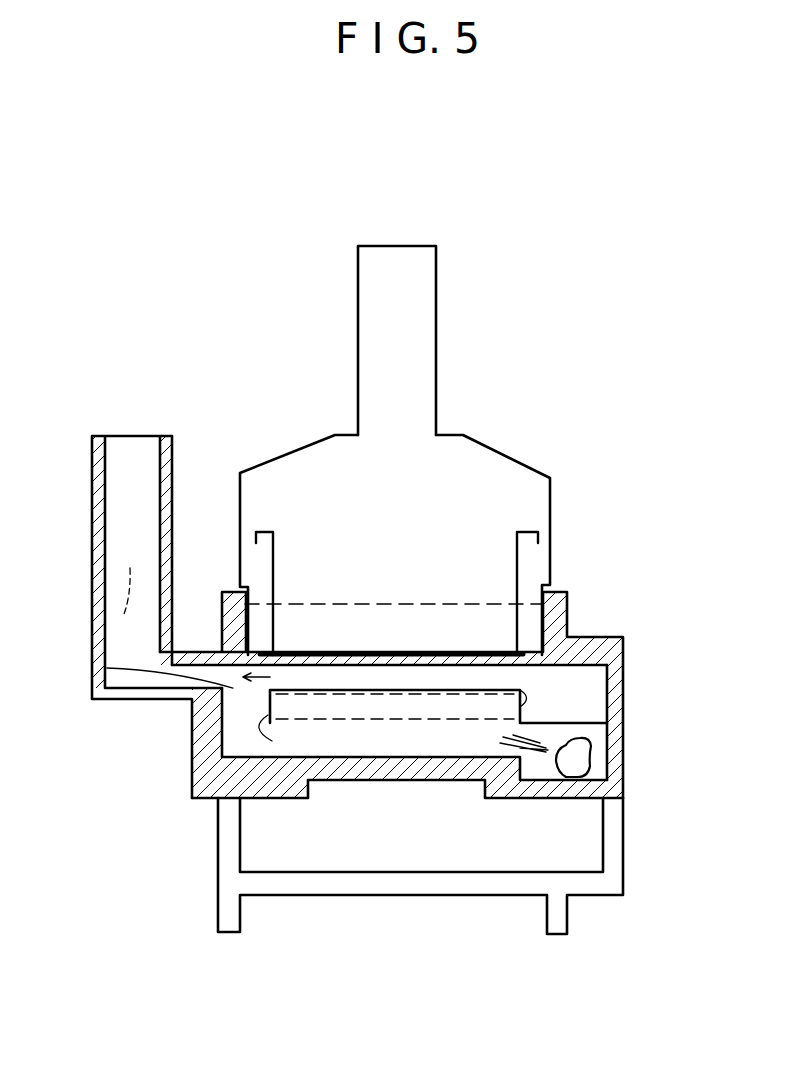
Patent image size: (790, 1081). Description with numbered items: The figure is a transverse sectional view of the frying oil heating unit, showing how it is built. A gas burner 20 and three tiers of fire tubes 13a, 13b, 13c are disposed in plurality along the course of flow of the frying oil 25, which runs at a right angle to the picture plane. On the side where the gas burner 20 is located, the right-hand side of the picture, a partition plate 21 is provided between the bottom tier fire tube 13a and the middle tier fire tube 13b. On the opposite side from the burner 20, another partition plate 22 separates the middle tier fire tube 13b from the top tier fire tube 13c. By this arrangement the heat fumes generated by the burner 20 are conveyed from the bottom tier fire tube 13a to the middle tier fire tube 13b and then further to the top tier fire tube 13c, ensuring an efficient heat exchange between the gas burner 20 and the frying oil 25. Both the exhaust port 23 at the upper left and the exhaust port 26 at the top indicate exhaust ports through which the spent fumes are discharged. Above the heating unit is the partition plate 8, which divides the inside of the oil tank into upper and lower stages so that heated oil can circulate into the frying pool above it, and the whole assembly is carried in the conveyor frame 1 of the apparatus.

The conveyor frame 1 is at (518, 466).
The partition plate 8 is at (323, 652).
The bottom tier fire tube 13a is at (265, 746).
The middle tier fire tube 13b is at (265, 705).
The top tier fire tube 13c is at (520, 677).
The gas burner 20 is at (582, 757).
The partition plate 21 is at (567, 712).
The partition plate 22 is at (91, 665).
The exhaust port 23 is at (126, 447).
The frying oil 25 is at (435, 623).
The exhaust port 26 is at (396, 258).